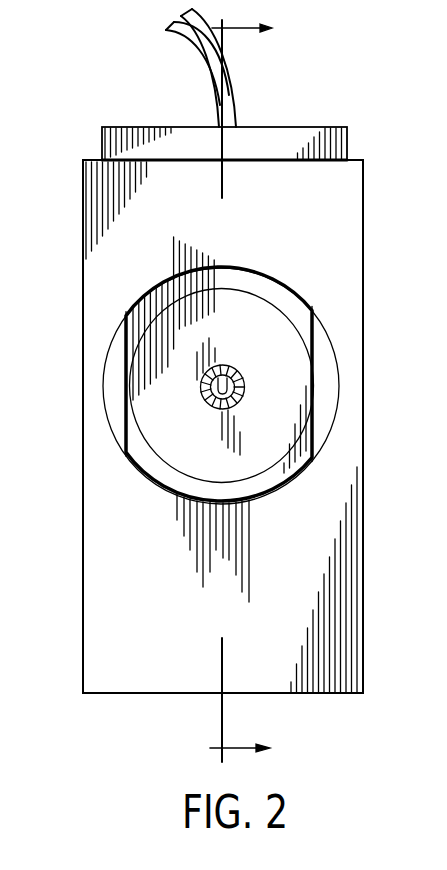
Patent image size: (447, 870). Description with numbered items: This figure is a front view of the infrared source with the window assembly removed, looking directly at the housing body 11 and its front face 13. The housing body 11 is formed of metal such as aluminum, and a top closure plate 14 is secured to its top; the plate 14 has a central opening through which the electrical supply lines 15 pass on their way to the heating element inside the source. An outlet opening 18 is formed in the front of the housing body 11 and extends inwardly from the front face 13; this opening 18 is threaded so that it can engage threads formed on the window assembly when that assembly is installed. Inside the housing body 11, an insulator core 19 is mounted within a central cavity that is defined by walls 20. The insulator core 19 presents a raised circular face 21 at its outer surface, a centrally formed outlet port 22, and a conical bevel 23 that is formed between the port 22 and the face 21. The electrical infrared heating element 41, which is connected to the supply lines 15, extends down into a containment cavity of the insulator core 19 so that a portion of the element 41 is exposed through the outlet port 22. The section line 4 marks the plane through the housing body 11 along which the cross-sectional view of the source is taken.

The cross-section line 4- 4 is at (250, 393).
The housing body 11 is at (363, 218).
The front face 13 is at (92, 237).
The top closure plate 14 is at (310, 127).
The electrical supply lines 15 is at (193, 33).
The outlet opening 18 is at (340, 395).
The insulator core 19 is at (167, 466).
The walls 20 is at (123, 378).
The raised circular face 21 is at (262, 317).
The outlet port 22 is at (215, 393).
The conical bevel 23 is at (240, 392).
The electrical infrared heating element 41 is at (216, 384).